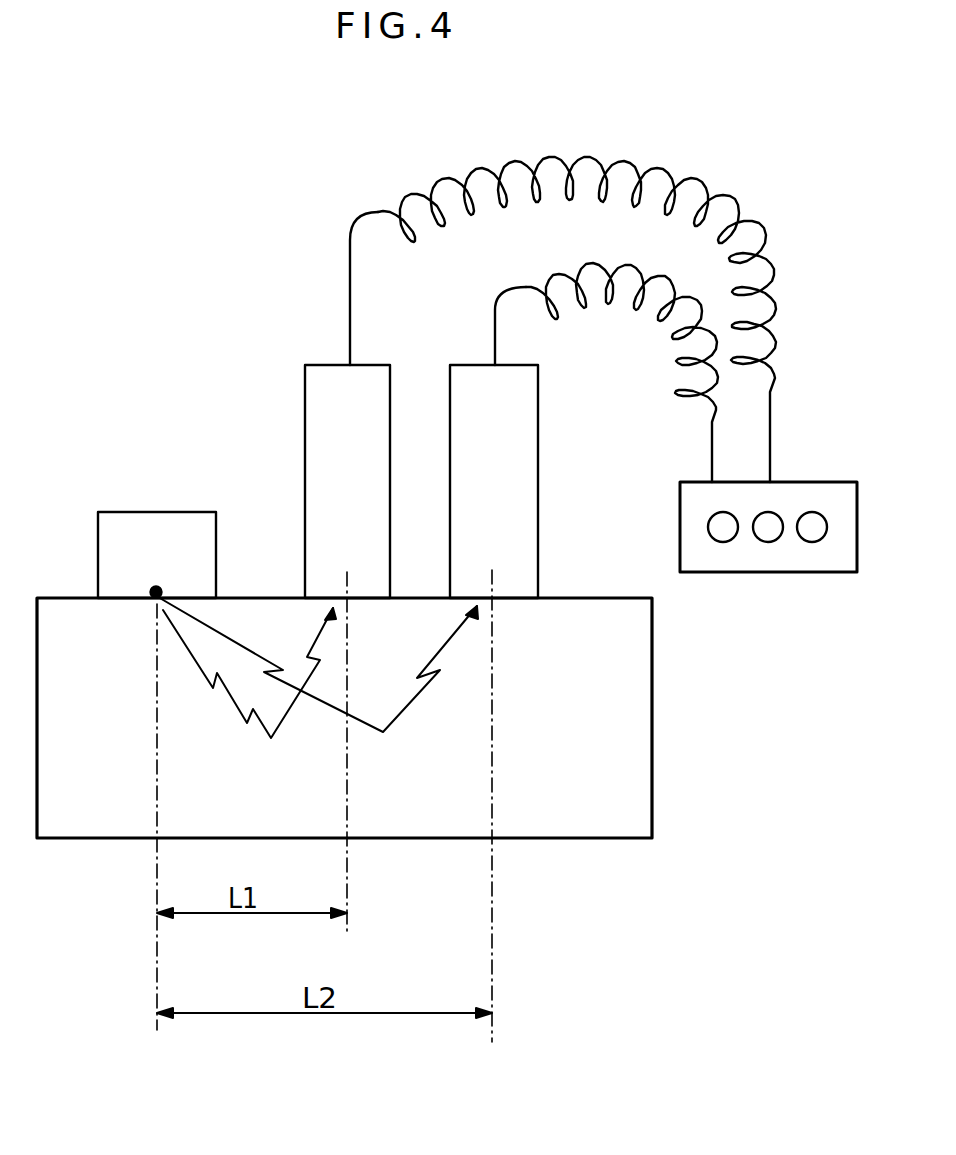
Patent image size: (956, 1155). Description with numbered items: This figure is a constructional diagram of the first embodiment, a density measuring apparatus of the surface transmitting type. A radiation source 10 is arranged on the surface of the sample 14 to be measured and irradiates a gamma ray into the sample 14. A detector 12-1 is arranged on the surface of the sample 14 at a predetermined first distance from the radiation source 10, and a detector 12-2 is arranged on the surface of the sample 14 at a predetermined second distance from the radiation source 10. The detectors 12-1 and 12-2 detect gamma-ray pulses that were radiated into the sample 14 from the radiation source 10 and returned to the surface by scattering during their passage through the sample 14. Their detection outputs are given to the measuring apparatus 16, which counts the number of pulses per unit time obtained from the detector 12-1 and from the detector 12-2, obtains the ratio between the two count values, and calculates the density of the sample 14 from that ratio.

The radiation source 10 is at (156, 592).
The detector 12-1 is at (307, 382).
The detector 12-2 is at (538, 392).
The sample 14 is at (641, 712).
The measuring apparatus 16 is at (810, 482).